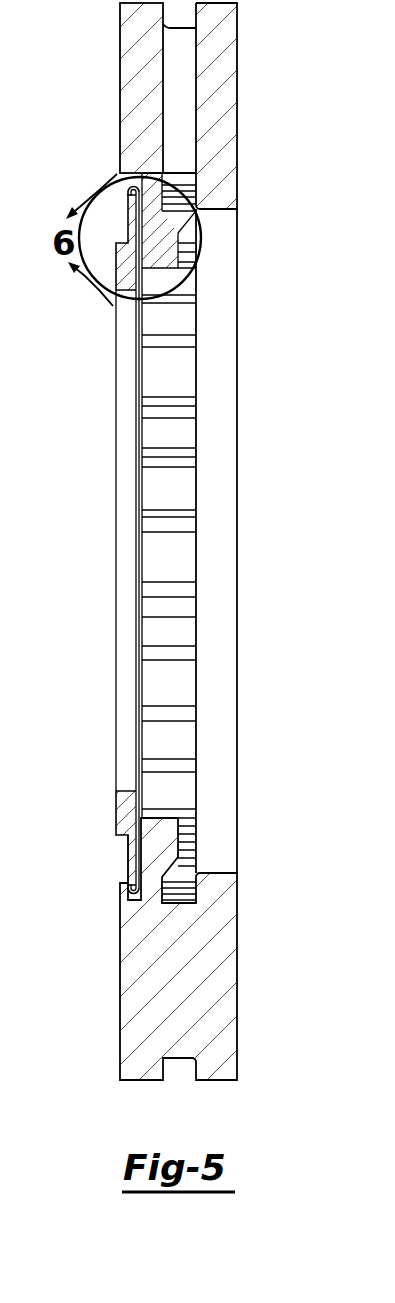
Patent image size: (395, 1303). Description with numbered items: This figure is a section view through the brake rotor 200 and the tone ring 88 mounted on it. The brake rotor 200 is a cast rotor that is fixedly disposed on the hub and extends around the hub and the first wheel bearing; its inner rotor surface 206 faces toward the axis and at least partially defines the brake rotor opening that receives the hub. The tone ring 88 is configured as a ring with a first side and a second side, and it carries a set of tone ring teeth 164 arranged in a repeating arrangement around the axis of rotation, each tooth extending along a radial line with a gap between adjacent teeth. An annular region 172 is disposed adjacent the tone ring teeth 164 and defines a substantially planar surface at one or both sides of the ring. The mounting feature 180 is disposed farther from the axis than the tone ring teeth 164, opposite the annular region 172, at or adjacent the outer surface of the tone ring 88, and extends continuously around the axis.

The brake rotor 200 is at (238, 88).
The inner rotor surface 206 is at (126, 190).
The tone ring teeth 164 is at (116, 270).
The tone ring 88 is at (116, 358).
The annular region 172 is at (128, 862).
The mounting feature 180 is at (120, 883).